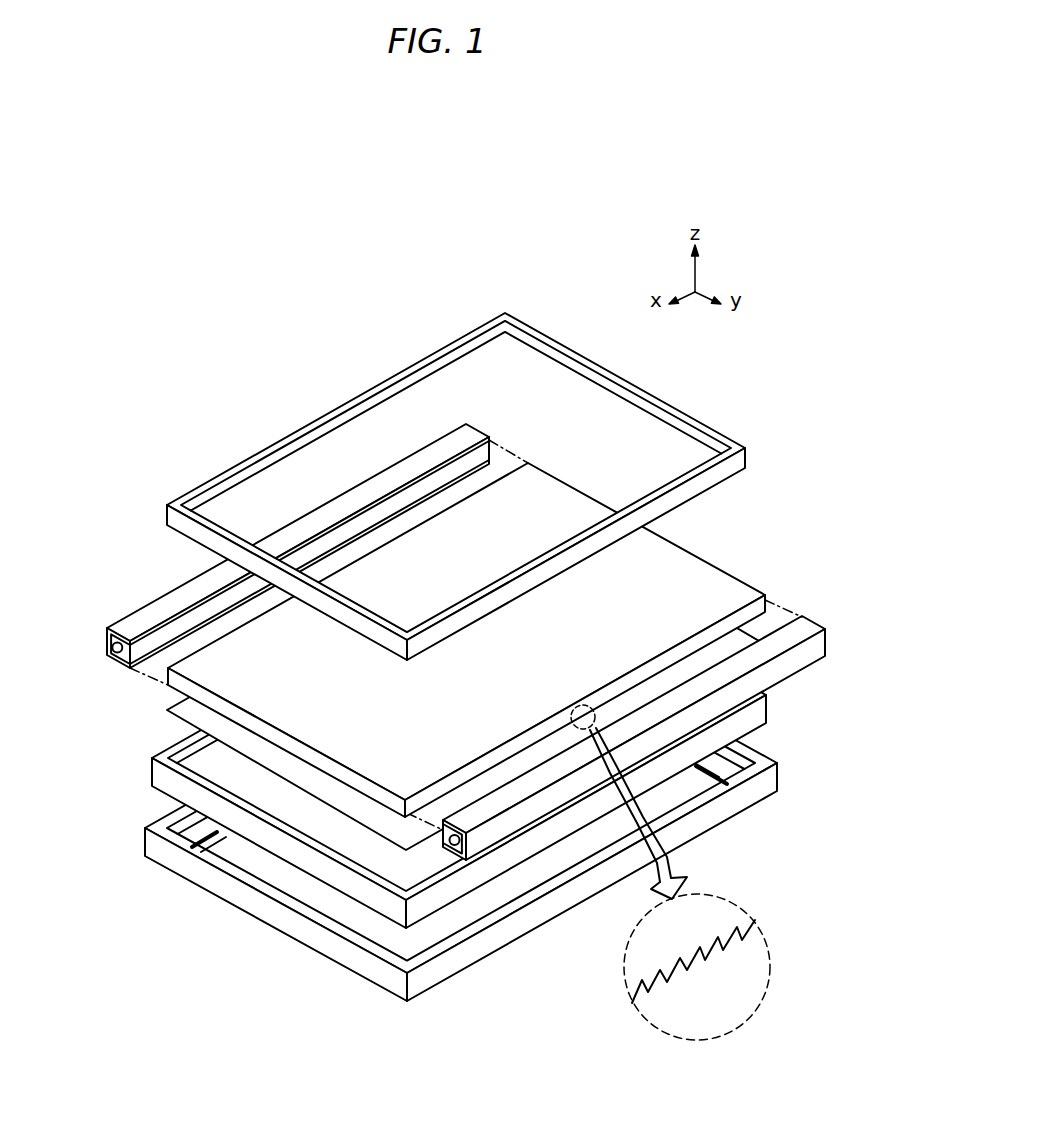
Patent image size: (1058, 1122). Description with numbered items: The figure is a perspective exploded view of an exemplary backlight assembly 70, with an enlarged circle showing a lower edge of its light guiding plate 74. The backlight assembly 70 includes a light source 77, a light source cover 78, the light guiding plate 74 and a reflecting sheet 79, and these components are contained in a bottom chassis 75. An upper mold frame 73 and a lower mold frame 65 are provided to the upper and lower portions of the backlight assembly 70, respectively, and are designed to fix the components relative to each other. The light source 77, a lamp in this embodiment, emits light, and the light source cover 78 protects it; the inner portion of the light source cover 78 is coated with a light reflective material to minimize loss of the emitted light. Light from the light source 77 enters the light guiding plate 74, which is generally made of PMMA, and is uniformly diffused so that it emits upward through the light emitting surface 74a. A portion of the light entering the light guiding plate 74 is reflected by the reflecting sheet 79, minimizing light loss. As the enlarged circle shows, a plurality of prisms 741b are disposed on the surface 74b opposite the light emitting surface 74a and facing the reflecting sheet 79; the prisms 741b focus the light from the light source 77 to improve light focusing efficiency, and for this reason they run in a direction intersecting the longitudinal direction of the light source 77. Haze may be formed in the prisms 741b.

The lower mold frame 65 is at (487, 809).
The backlight assembly 70 is at (326, 290).
The upper mold frame 73 is at (482, 486).
The light guiding plate 74 is at (485, 751).
The light emitting surface 74a is at (481, 631).
The surface opposite the light emitting surface 74b is at (469, 817).
The prisms 741b is at (670, 872).
The bottom chassis 75 is at (483, 740).
The light source 77 is at (278, 743).
The light source cover 78 is at (471, 642).
The reflecting sheet 79 is at (493, 677).